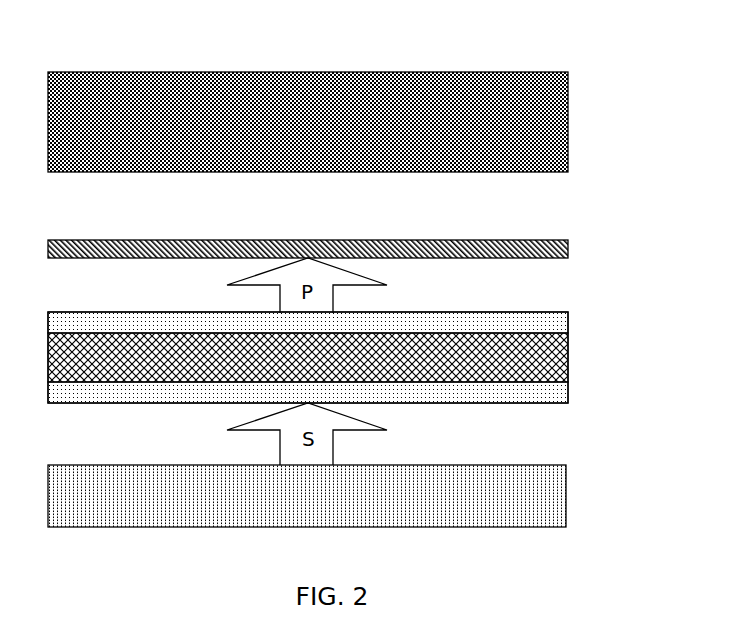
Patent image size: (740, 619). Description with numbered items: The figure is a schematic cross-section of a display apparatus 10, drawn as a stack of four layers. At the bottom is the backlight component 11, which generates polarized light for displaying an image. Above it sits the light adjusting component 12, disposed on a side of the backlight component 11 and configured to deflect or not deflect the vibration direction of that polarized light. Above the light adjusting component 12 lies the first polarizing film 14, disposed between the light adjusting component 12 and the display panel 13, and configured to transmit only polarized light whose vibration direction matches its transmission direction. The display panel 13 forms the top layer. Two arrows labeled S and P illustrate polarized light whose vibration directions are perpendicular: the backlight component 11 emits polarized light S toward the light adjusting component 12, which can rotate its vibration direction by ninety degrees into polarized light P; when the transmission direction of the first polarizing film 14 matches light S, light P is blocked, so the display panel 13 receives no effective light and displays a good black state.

The display apparatus 10 is at (70, 41).
The backlight component 11 is at (543, 497).
The light adjusting component 12 is at (579, 315).
The display panel 13 is at (543, 108).
The first polarizing film 14 is at (568, 249).